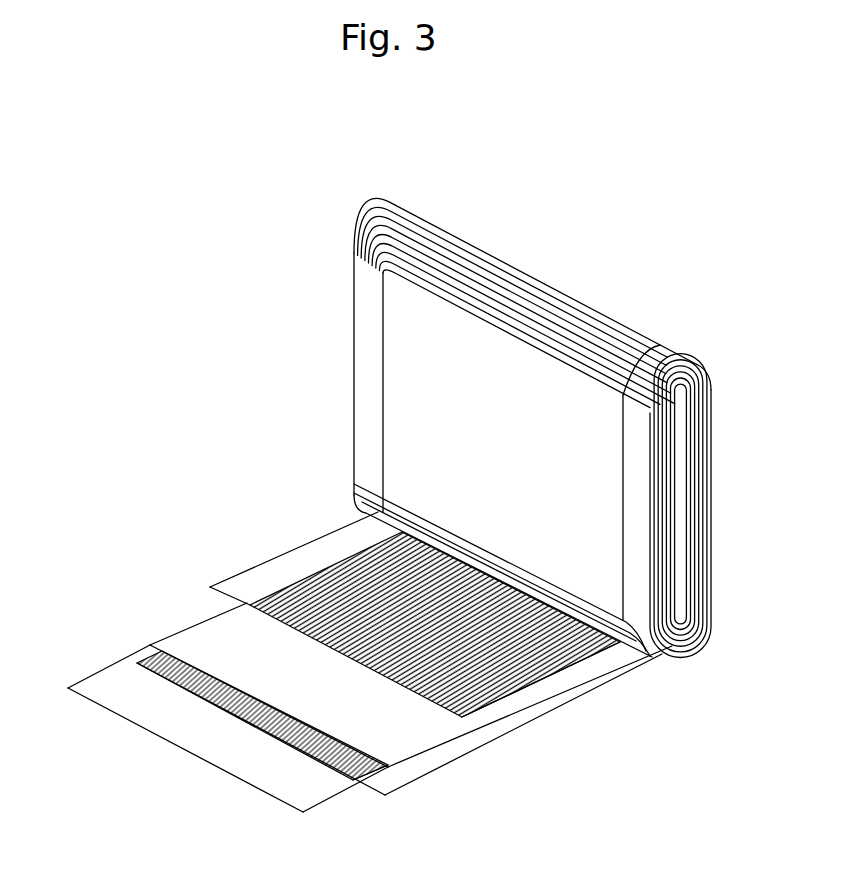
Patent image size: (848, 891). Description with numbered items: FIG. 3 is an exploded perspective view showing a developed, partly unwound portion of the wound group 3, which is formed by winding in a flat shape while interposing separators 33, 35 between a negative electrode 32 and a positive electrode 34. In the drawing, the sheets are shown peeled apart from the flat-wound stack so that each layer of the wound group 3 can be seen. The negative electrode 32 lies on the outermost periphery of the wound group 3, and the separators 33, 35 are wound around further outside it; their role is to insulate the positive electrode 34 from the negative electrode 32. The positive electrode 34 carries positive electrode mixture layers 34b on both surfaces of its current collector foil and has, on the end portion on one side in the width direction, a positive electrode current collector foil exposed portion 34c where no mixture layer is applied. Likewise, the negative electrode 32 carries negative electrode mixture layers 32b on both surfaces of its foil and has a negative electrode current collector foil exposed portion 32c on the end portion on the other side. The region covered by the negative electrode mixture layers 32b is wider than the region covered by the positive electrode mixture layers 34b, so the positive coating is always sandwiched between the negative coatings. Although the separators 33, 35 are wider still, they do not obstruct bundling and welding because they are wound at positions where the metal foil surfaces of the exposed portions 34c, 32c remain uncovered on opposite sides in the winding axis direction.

The wound group 3 is at (515, 313).
The negative electrode 32 is at (252, 718).
The negative electrode mixture layer 32b is at (142, 660).
The negative electrode current collector foil exposed portion 32c is at (638, 512).
The separator 33 is at (193, 618).
The positive electrode 34 is at (578, 650).
The positive electrode mixture layer 34b is at (500, 687).
The positive electrode current collector foil exposed portion 34c is at (363, 363).
The separator 35 is at (88, 678).